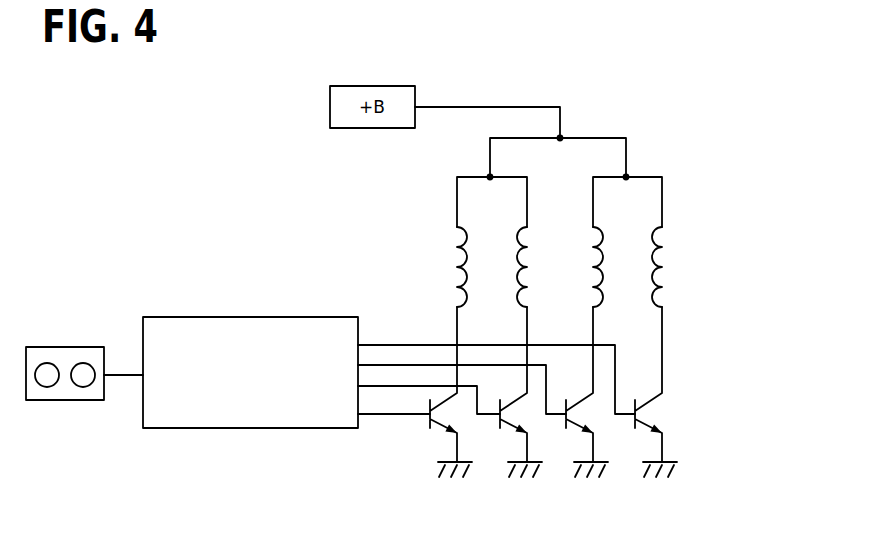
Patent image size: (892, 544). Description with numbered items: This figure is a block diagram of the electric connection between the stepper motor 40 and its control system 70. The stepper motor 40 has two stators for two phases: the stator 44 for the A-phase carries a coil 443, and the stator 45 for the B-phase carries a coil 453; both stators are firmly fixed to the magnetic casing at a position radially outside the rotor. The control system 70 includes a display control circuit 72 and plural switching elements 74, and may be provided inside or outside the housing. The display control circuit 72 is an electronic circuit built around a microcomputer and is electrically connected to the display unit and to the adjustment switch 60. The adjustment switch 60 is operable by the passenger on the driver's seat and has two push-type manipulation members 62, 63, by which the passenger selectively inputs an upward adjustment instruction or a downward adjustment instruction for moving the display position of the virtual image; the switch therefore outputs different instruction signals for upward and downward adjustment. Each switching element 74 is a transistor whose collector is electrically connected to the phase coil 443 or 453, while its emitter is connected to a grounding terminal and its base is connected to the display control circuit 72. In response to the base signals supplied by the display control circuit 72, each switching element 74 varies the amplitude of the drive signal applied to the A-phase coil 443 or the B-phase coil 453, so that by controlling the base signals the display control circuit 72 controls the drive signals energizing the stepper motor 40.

The stepper motor 40 is at (556, 226).
The stator 44 is at (441, 242).
The coil 443 is at (517, 280).
The stator 45 is at (675, 242).
The coil 453 is at (605, 303).
The adjustment switch 60 is at (65, 387).
The manipulation member 62 is at (47, 363).
The manipulation member 63 is at (83, 363).
The control system 70 is at (224, 376).
The display control circuit 72 is at (248, 430).
The switching element 74 is at (428, 429).